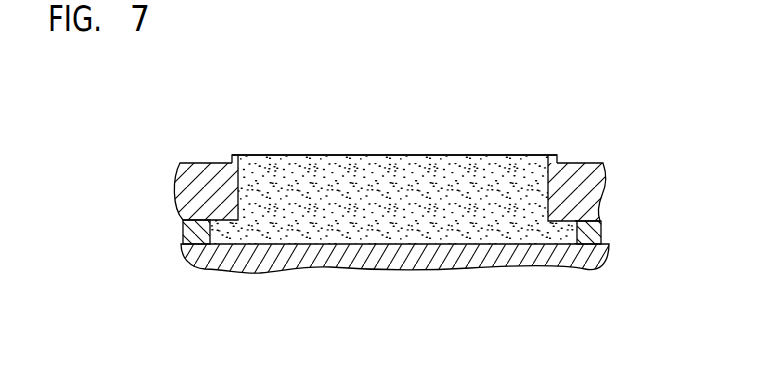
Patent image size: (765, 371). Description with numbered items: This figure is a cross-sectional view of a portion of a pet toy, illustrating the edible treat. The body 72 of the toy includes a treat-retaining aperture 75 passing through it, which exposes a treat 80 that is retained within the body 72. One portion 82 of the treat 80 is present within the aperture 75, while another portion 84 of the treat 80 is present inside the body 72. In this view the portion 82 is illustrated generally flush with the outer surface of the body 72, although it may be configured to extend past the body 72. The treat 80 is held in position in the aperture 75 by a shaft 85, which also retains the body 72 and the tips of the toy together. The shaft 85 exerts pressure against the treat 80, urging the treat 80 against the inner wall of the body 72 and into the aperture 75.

The body 72 is at (202, 163).
The treat-retaining aperture 75 is at (558, 163).
The treat 80 is at (517, 155).
The portion of treat 82 is at (277, 155).
The portion of treat 84 is at (242, 227).
The shaft 85 is at (275, 270).